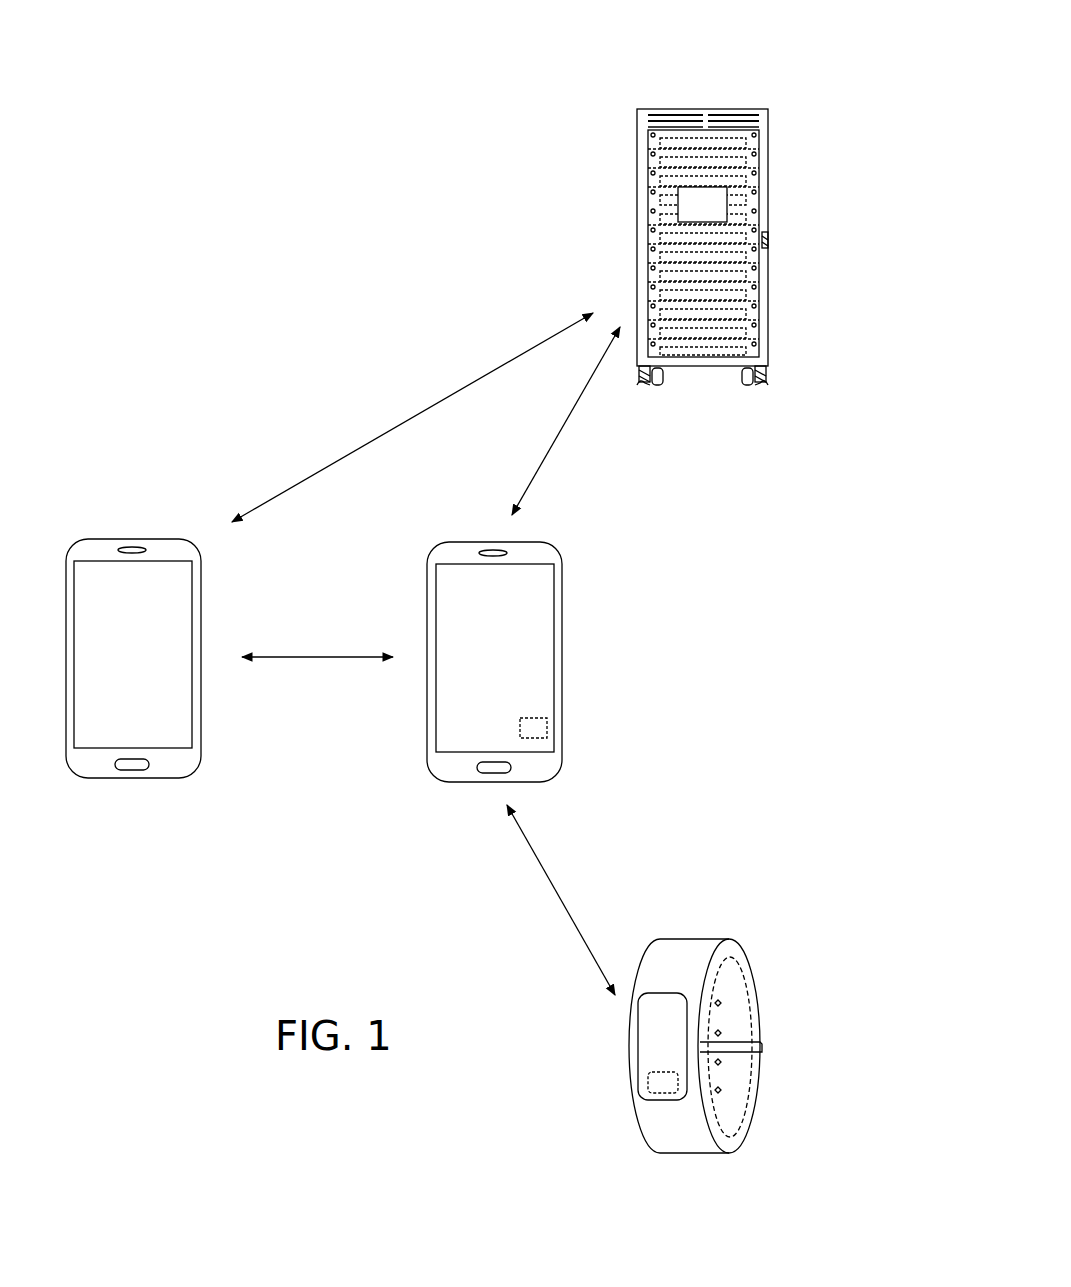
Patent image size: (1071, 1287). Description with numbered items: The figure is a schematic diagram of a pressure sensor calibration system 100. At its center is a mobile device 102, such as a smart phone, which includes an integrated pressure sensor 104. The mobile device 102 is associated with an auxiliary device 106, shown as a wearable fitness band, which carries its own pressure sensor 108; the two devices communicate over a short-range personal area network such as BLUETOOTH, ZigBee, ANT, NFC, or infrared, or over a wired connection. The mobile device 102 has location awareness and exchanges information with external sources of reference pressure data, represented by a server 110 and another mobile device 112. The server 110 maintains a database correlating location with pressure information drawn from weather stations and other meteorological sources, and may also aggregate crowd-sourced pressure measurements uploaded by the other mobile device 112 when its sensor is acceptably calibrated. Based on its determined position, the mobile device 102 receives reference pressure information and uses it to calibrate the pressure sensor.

The calibration system 100 is at (255, 297).
The mobile device 102 is at (527, 542).
The integrated pressure sensor 104 is at (547, 727).
The auxiliary device 106 is at (715, 939).
The pressure sensor 108 is at (648, 1078).
The server 110 is at (732, 107).
The another mobile device 112 is at (165, 539).